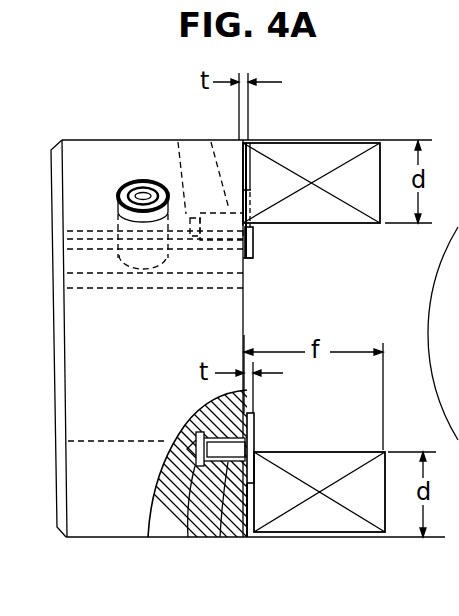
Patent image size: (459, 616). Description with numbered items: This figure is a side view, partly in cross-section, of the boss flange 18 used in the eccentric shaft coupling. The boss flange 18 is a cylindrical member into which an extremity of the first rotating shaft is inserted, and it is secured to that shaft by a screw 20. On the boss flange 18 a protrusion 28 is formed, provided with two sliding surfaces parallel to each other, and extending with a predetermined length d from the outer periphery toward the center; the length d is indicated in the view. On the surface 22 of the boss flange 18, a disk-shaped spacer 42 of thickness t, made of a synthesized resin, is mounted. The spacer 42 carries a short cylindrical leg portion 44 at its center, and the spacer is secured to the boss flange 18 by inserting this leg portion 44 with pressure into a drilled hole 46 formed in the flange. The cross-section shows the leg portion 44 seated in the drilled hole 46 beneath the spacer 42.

The boss flange 18 is at (115, 538).
The screw 20 is at (140, 179).
The surface 22 is at (244, 307).
The protrusion 28 is at (336, 225).
The disk-shaped spacer 42 is at (256, 228).
The short cylindrical leg portion 44 is at (210, 140).
The drilled hole 46 is at (177, 140).